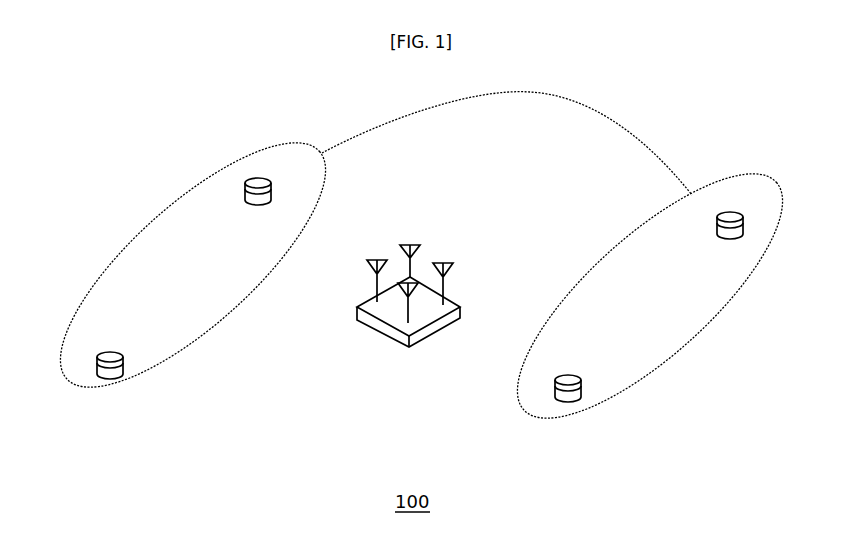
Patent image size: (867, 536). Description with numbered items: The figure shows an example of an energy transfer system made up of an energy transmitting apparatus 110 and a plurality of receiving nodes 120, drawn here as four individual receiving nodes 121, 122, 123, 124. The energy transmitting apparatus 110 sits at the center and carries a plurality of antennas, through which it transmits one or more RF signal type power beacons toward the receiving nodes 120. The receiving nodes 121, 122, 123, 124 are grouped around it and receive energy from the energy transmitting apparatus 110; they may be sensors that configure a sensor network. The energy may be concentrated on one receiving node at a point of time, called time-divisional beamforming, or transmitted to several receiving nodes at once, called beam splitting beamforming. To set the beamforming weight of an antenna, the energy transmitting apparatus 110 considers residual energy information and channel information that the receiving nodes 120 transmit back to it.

The energy transmitting apparatus 110 is at (402, 347).
The receiving nodes 120 is at (422, 264).
The receiving node 121 is at (257, 178).
The receiving node 122 is at (104, 352).
The receiving node 123 is at (727, 212).
The receiving node 124 is at (565, 375).